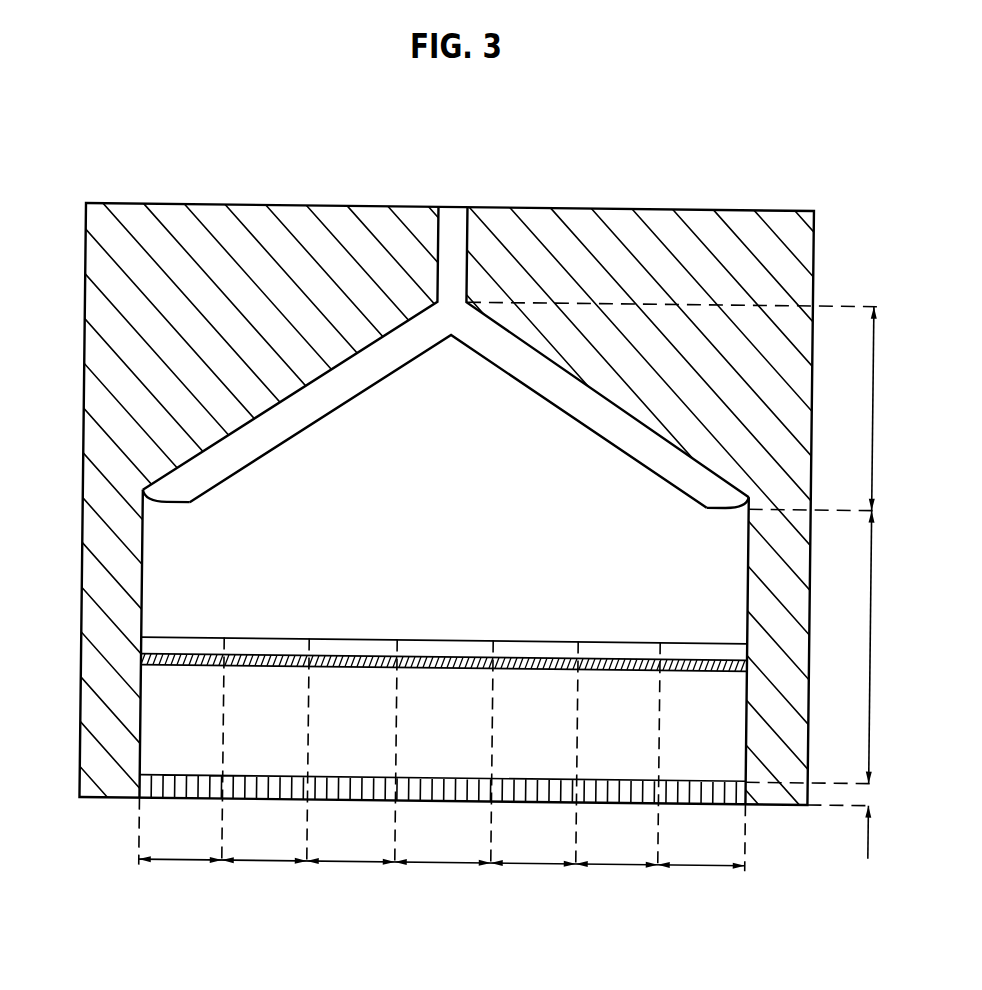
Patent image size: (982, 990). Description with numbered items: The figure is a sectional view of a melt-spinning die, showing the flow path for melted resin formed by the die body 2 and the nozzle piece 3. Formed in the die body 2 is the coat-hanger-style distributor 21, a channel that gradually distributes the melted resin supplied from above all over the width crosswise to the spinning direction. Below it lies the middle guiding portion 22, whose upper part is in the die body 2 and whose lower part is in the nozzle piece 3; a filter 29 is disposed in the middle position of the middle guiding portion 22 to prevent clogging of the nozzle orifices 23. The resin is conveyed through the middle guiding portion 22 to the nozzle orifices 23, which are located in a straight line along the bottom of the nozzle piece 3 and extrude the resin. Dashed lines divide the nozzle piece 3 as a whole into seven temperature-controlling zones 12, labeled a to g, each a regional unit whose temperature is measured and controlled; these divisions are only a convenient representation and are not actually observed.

The die body 2 is at (713, 242).
The coat-hanger-style distributor 21 is at (243, 437).
The nozzle piece 3 is at (160, 728).
The filter 29 is at (143, 661).
The nozzle orifices 23 is at (172, 790).
The middle guiding portion 22 is at (828, 646).
The temperature-controlling zones 12 is at (633, 763).